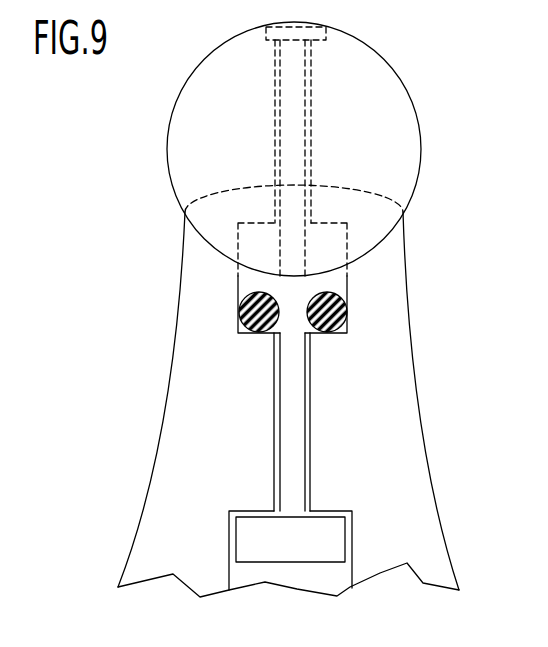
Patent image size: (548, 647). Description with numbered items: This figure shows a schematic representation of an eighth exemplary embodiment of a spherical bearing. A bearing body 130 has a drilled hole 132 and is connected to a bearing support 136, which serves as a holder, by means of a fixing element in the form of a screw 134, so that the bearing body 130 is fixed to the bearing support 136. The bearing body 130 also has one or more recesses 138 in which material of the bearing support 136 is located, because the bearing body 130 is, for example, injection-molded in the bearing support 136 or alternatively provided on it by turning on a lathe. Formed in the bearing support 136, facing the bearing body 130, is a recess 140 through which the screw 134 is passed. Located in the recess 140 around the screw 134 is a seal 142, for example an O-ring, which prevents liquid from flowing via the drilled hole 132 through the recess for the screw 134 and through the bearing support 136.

The bearing body 130 is at (185, 147).
The drilled hole 132 is at (312, 117).
The screw 134 is at (292, 429).
The bearing support 136 is at (180, 452).
The recesses 138 is at (333, 242).
The recess 140 is at (248, 283).
The seal 142 is at (347, 311).